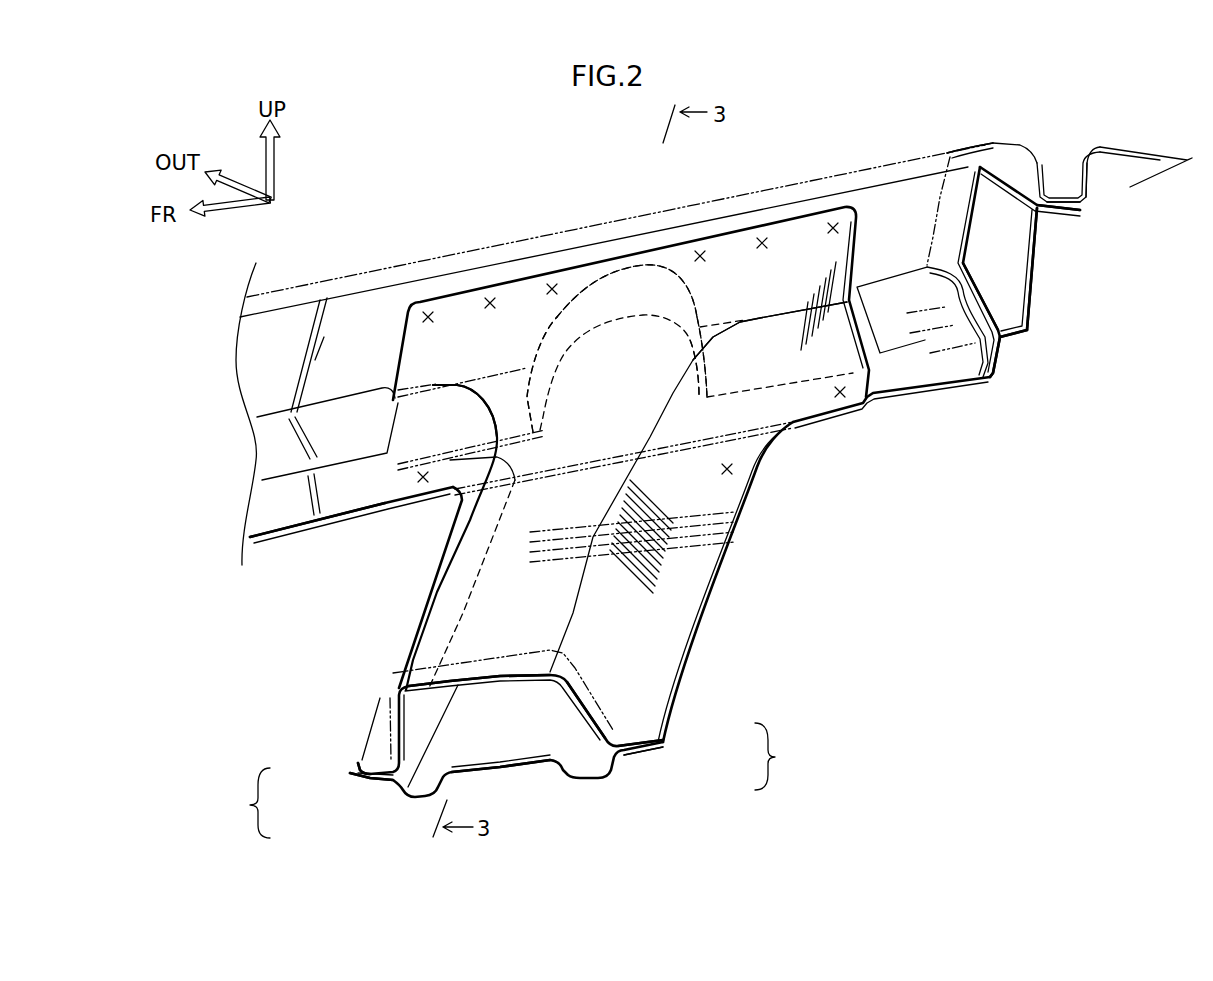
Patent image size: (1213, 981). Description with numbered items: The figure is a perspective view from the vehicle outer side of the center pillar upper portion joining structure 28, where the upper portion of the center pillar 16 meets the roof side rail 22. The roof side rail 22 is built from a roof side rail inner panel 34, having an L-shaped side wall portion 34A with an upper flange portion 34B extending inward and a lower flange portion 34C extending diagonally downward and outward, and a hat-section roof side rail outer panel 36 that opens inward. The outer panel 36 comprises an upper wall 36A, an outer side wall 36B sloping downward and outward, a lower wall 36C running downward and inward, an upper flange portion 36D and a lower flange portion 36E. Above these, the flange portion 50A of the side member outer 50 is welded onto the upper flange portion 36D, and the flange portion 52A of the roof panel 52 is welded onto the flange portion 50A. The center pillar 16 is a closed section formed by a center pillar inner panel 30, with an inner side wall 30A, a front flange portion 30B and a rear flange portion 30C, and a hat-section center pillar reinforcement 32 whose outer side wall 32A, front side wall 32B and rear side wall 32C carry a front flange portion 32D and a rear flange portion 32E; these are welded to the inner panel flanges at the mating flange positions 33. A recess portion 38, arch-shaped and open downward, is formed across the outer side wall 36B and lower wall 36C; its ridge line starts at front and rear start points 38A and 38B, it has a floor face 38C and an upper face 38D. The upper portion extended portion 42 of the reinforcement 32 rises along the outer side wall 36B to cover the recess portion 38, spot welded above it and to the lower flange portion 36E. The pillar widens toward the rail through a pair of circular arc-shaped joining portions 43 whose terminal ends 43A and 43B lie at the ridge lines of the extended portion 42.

The center pillar 16 is at (707, 693).
The roof side rail 22 is at (353, 280).
The center pillar upper portion joining structure 28 is at (350, 583).
The center pillar inner panel 30 is at (535, 778).
The inner side wall 30A is at (507, 753).
The front flange portion 30B is at (377, 780).
The rear flange portion 30C is at (647, 752).
The center pillar reinforcement 32 is at (525, 657).
The outer side wall 32A is at (487, 670).
The front side wall 32B is at (408, 720).
The rear side wall 32C is at (587, 687).
The front flange portion 32D is at (357, 773).
The rear flange portion 32E is at (668, 735).
The mating flange positions 33 is at (514, 780).
The roof side rail inner panel 34 is at (1043, 282).
The side wall portion 34A is at (1032, 308).
The upper flange portion 34B is at (1053, 218).
The lower flange portion 34C is at (1003, 357).
The roof side rail outer panel 36 is at (427, 270).
The upper wall 36A is at (1023, 175).
The outer side wall 36B is at (960, 200).
The lower wall 36C is at (957, 277).
The upper flange portion 36D is at (1043, 197).
The lower flange portion 36E is at (977, 380).
The recess portion 38 is at (598, 308).
The front start point of ridge line 38A is at (528, 372).
The rear start point of ridge line 38B is at (700, 327).
The floor face 38C is at (650, 353).
The upper face 38D is at (637, 287).
The upper portion extended portion 42 is at (520, 270).
The circular arc-shaped joining portions 43 is at (438, 434).
The front terminal end 43A is at (433, 385).
The rear terminal end 43B is at (760, 318).
The side member outer 50 is at (878, 155).
The flange portion 50A is at (1085, 210).
The roof panel 52 is at (1151, 138).
The flange portion 52A is at (1068, 195).